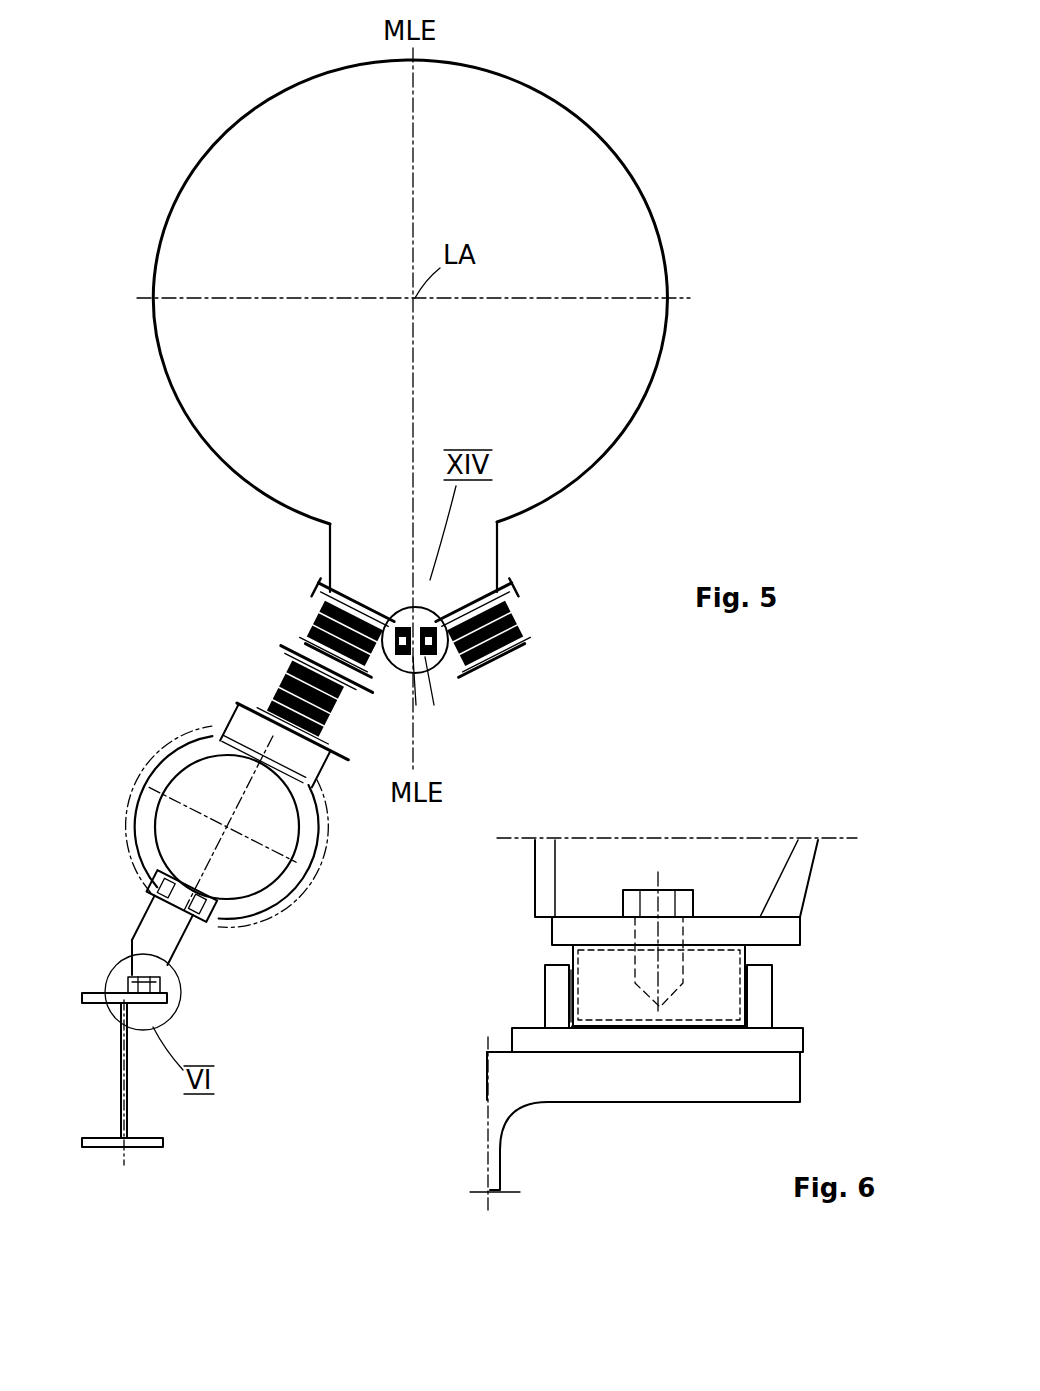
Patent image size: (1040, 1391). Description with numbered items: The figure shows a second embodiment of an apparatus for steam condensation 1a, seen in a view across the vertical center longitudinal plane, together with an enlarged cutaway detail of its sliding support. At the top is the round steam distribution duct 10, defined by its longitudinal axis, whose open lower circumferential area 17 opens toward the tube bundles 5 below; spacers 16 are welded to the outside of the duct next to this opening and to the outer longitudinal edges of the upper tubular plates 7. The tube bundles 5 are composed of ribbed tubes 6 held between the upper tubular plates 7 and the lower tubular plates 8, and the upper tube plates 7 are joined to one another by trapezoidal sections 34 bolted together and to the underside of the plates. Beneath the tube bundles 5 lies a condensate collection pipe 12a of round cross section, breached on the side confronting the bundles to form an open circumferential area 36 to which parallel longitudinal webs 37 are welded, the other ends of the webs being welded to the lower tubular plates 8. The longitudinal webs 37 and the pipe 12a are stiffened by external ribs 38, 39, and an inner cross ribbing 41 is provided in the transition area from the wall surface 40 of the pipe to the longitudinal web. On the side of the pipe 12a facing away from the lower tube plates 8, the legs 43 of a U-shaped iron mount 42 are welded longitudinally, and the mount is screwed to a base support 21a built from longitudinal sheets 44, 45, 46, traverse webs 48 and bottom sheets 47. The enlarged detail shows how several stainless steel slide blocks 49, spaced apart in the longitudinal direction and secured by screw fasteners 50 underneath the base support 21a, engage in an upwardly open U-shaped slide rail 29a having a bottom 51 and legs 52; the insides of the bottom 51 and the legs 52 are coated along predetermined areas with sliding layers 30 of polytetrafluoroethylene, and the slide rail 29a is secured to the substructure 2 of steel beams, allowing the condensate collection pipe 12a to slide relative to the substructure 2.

In FIG. 5, the apparatus for steam condensation 1a is at (706, 378).
In FIG. 5, the substructure 2 is at (120, 1150).
In FIG. 6, the substructure 2 is at (503, 1104).
In FIG. 5, the tube bundles 5 is at (402, 586).
In FIG. 5, the ribbed tubes 6 is at (403, 586).
In FIG. 5, the upper tubular plates 7 is at (360, 606).
In FIG. 5, the lower tubular plates 8 is at (300, 676).
In FIG. 5, the steam distribution duct 10 is at (632, 166).
In FIG. 5, the condensate collection pipes 12a is at (252, 787).
In FIG. 5, the spacers 16 is at (317, 531).
In FIG. 5, the open lower circumferential area 17 is at (398, 540).
In FIG. 5, the base supports 21a is at (188, 916).
In FIG. 6, the base supports 21a is at (772, 937).
In FIG. 5, the slide rails 29a is at (179, 989).
In FIG. 6, the slide rails 29a is at (536, 1001).
In FIG. 6, the sliding layers 30 is at (595, 950).
In FIG. 5, the trapezoidal sections 34 is at (407, 667).
In FIG. 5, the open circumferential area 36 is at (252, 787).
In FIG. 5, the longitudinal webs 37 is at (252, 787).
In FIG. 5, the external ribs 38 is at (239, 801).
In FIG. 5, the external ribs 39 is at (234, 823).
In FIG. 5, the wall surface 40 is at (307, 823).
In FIG. 5, the inner cross ribbing 41 is at (283, 768).
In FIG. 5, the U-shaped iron mounts 42 is at (188, 901).
In FIG. 5, the legs 43 is at (179, 890).
In FIG. 5, the longitudinal sheet 44 is at (140, 878).
In FIG. 5, the longitudinal sheet 45 is at (177, 925).
In FIG. 6, the longitudinal sheet 45 is at (800, 865).
In FIG. 5, the longitudinal sheet 46 is at (109, 971).
In FIG. 6, the longitudinal sheet 46 is at (535, 863).
In FIG. 5, the bottom sheets 47 is at (120, 961).
In FIG. 6, the bottom sheets 47 is at (787, 921).
In FIG. 5, the traverse webs 48 is at (109, 953).
In FIG. 6, the traverse webs 48 is at (730, 866).
In FIG. 5, the slide blocks 49 is at (138, 953).
In FIG. 6, the slide blocks 49 is at (713, 983).
In FIG. 6, the screw fasteners 50 is at (648, 900).
In FIG. 6, the bottom 51 is at (700, 1040).
In FIG. 6, the legs 52 is at (555, 973).